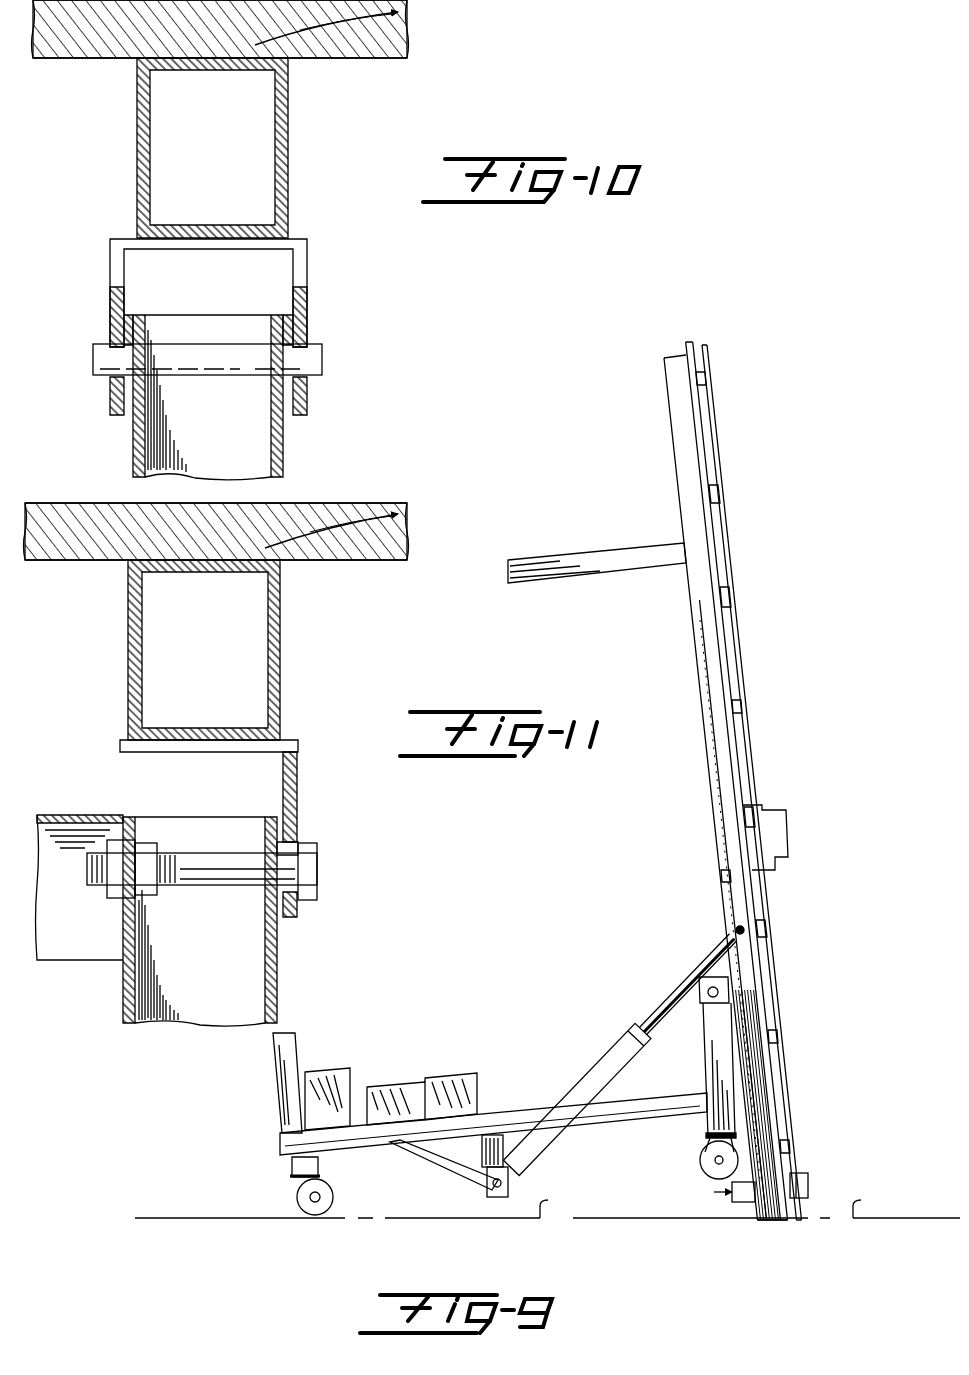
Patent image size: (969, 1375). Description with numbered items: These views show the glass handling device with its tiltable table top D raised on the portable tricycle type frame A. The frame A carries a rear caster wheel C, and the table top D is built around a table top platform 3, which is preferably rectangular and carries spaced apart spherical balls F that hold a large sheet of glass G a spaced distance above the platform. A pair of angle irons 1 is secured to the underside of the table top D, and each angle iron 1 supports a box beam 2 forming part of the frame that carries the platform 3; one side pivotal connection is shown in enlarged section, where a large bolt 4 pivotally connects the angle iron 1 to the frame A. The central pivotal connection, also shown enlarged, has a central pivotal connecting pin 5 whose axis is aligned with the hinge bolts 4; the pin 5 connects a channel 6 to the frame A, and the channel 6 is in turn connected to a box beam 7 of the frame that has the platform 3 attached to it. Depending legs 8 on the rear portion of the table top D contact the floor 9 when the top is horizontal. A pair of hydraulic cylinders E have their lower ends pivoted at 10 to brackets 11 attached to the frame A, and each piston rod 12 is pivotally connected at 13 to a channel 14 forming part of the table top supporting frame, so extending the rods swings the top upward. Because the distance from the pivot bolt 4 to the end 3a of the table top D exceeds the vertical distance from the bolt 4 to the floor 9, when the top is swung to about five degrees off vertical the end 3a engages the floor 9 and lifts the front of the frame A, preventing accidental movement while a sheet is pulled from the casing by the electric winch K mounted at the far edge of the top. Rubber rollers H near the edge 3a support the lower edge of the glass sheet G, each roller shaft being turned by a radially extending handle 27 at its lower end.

In FIG. 10, the table top platform 3 is at (409, 16).
In FIG. 11, the table top platform 3 is at (408, 533).
In FIG. 10, the box beam 7 is at (288, 138).
In FIG. 10, the channel 6 is at (307, 283).
In FIG. 10, the central pivotal connecting pin 5 is at (252, 375).
In FIG. 10, the portable tricycle type frame A is at (284, 452).
In FIG. 11, the portable tricycle type frame A is at (278, 958).
In FIG. 9, the portable tricycle type frame A is at (650, 1120).
In FIG. 11, the tiltable table top D is at (355, 565).
In FIG. 11, the box beam 2 is at (280, 688).
In FIG. 11, the angle iron 1 is at (298, 765).
In FIG. 9, the angle iron 1 is at (705, 1003).
In FIG. 11, the bolt 4 is at (247, 885).
In FIG. 9, the bolt 4 is at (699, 985).
In FIG. 9, the depending leg 8 is at (645, 540).
In FIG. 9, the spherical balls F is at (712, 495).
In FIG. 9, the sheet of glass G is at (750, 660).
In FIG. 9, the electric winch K is at (790, 820).
In FIG. 9, the channel 14 is at (720, 878).
In FIG. 9, the pivotal connection 13 is at (735, 930).
In FIG. 9, the piston rod 12 is at (655, 1012).
In FIG. 9, the hydraulic cylinder E is at (592, 1068).
In FIG. 9, the pivot 10 is at (488, 1185).
In FIG. 9, the bracket 11 is at (483, 1152).
In FIG. 9, the rear caster wheel C is at (335, 1190).
In FIG. 9, the handle 27 is at (732, 1197).
In FIG. 9, the rubber roller H is at (810, 1180).
In FIG. 9, the end of the table top 3a is at (770, 1222).
In FIG. 9, the floor 9 is at (547, 1206).